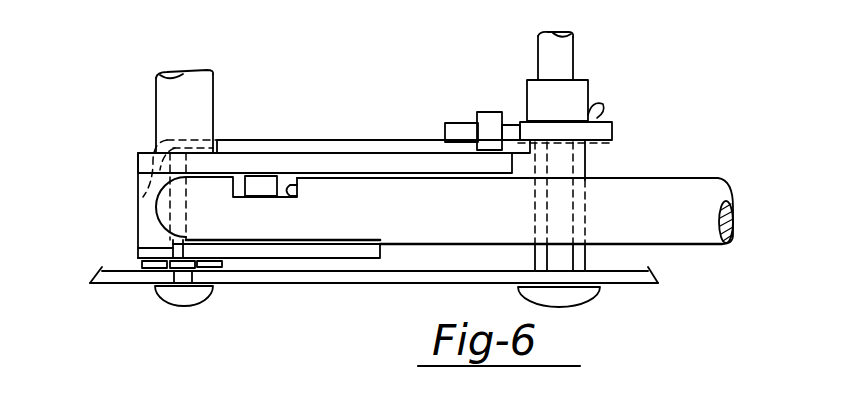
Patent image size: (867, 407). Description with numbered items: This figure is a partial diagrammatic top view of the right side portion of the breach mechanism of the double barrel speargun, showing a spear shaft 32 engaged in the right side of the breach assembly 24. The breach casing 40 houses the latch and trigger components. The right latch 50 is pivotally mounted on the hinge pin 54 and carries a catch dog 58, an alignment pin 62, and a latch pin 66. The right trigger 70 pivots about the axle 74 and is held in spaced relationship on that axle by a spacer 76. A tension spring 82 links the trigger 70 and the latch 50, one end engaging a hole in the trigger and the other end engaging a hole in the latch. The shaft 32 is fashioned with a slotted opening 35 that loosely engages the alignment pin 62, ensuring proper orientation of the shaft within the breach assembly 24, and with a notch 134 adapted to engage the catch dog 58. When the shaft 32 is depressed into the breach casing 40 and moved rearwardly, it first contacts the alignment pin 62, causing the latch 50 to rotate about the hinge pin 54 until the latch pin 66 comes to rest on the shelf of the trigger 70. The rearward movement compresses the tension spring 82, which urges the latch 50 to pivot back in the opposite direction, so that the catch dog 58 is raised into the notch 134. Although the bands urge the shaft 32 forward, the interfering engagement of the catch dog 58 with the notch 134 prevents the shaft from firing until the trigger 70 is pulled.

The breach assembly 24 is at (252, 305).
The shaft 32 is at (692, 197).
The slotted opening 35 is at (130, 196).
The breach casing 40 is at (275, 276).
The right latch 50 is at (340, 163).
The hinge pin 54 is at (163, 92).
The catch dog 58 is at (247, 190).
The alignment pin 62 is at (133, 217).
The latch pin 66 is at (493, 113).
The right trigger 70 is at (618, 133).
The axle 74 is at (562, 53).
The spacer 76 is at (572, 100).
The tension spring 82 is at (405, 143).
The notch 134 is at (298, 192).